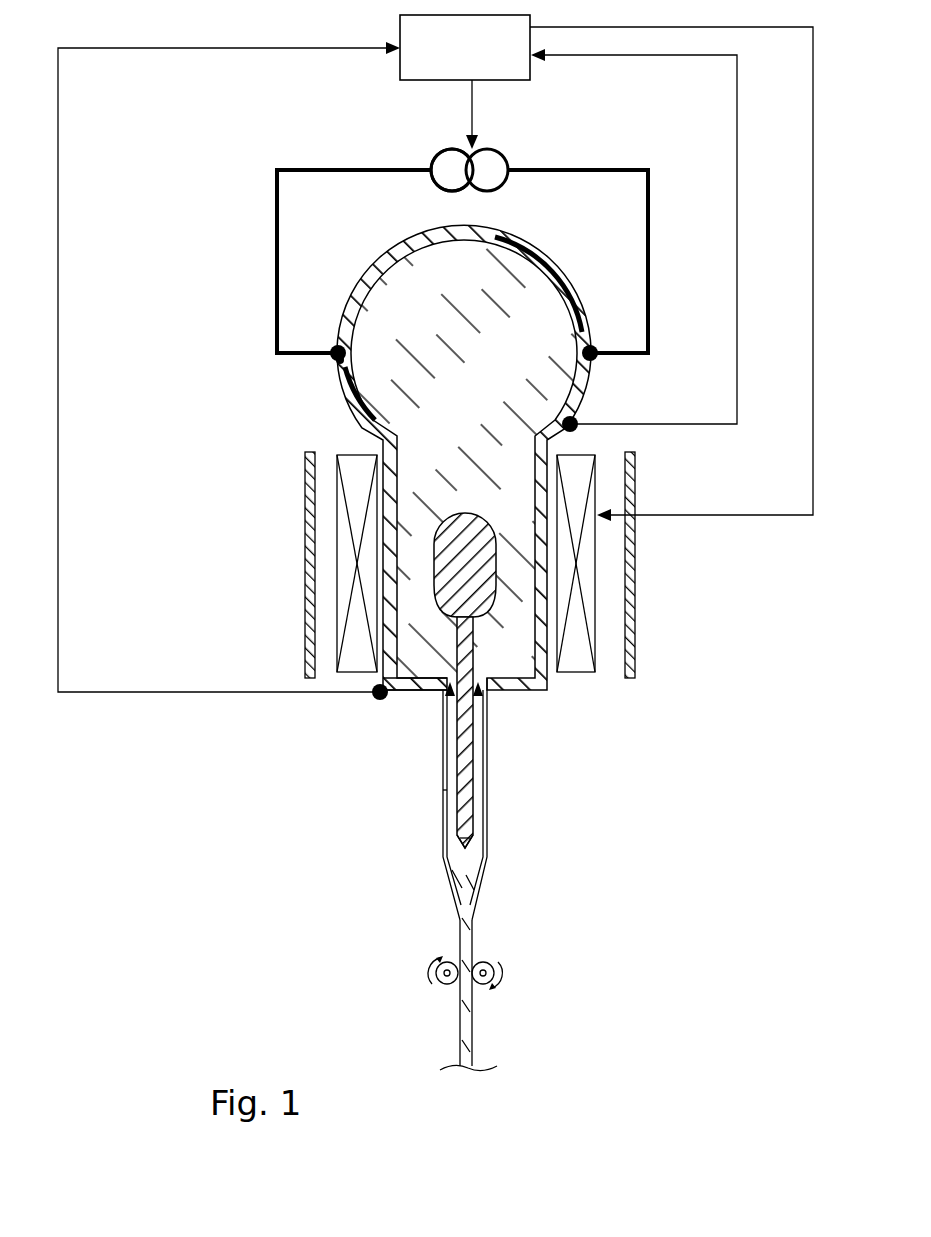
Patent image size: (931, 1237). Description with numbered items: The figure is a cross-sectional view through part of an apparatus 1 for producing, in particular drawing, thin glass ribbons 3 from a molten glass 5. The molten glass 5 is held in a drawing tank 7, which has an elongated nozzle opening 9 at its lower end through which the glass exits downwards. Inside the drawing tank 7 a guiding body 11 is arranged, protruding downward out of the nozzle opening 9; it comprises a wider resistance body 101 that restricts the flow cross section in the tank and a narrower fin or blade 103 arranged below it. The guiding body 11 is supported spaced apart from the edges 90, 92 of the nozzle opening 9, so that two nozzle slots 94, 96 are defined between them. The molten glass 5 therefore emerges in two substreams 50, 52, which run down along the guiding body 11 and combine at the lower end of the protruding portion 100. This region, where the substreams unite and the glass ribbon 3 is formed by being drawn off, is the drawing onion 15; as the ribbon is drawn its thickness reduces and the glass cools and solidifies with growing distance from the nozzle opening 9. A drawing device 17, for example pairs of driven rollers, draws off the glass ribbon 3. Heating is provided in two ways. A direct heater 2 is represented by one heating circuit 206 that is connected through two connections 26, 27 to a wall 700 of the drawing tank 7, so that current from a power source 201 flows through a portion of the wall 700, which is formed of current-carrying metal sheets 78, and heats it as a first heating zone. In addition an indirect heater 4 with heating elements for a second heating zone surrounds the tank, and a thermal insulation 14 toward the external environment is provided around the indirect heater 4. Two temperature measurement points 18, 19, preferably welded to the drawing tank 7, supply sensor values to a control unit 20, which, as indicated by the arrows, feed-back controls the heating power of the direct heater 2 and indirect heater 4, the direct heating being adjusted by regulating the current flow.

The apparatus 1 is at (216, 349).
The direct heater 2 is at (322, 118).
The glass ribbon 3 is at (473, 1038).
The indirect heater 4 is at (303, 556).
The molten glass 5 is at (562, 374).
The drawing tank 7 is at (198, 464).
The nozzle opening 9 is at (492, 664).
The guiding body 11 is at (455, 642).
The thermal insulation 14 is at (636, 655).
The drawing onion 15 is at (470, 863).
The drawing device 17 is at (490, 957).
The temperature measurement point 18 is at (372, 695).
The temperature measurement point 19 is at (578, 426).
The control unit 20 is at (448, 56).
The connection 26 is at (333, 348).
The connection 27 is at (596, 348).
The substream 50 is at (487, 800).
The substream 52 is at (443, 797).
The metal sheet 78 is at (574, 281).
The edge of the nozzle opening 90 is at (488, 694).
The edge of the nozzle opening 92 is at (443, 697).
The nozzle slot 94 is at (490, 697).
The nozzle slot 96 is at (449, 698).
The portion of the guiding body 100 is at (455, 838).
The resistance body 101 is at (434, 548).
The blade 103 is at (458, 836).
The power source 201 is at (510, 148).
The heating circuit 206 is at (281, 182).
The wall 700 is at (335, 362).